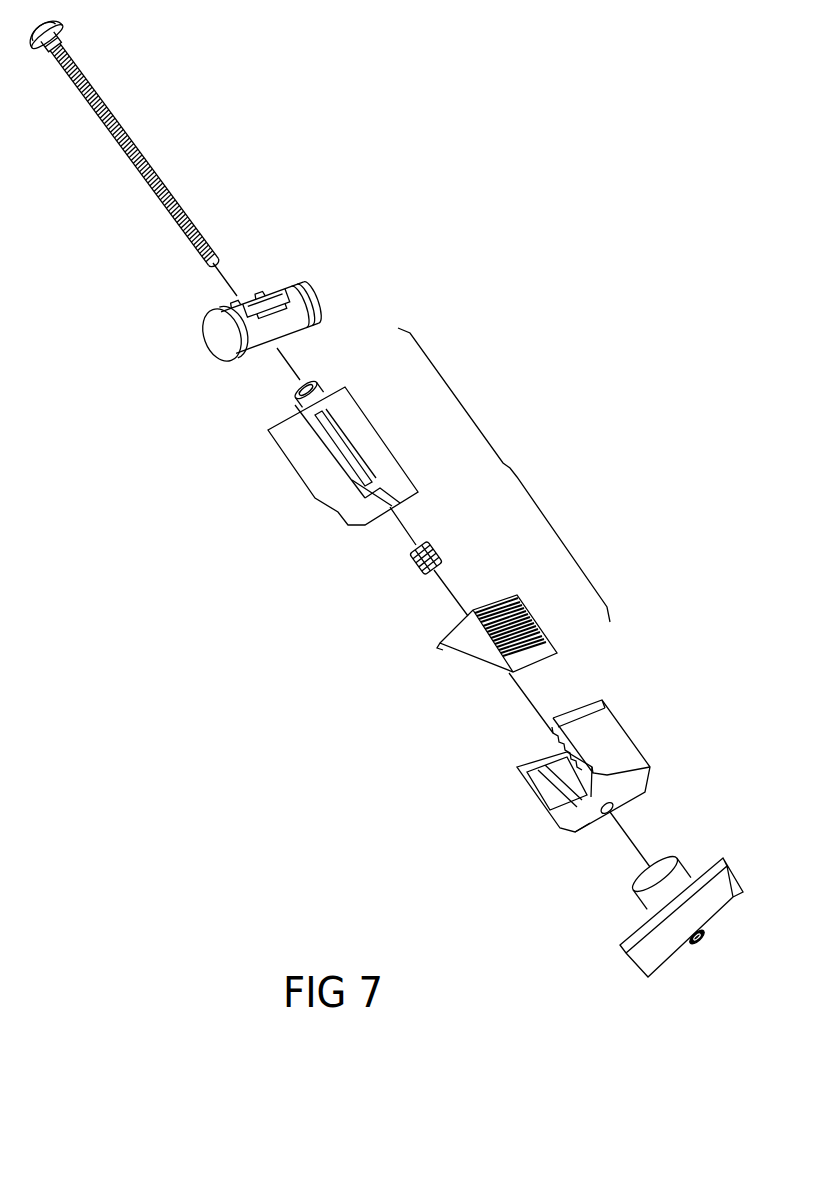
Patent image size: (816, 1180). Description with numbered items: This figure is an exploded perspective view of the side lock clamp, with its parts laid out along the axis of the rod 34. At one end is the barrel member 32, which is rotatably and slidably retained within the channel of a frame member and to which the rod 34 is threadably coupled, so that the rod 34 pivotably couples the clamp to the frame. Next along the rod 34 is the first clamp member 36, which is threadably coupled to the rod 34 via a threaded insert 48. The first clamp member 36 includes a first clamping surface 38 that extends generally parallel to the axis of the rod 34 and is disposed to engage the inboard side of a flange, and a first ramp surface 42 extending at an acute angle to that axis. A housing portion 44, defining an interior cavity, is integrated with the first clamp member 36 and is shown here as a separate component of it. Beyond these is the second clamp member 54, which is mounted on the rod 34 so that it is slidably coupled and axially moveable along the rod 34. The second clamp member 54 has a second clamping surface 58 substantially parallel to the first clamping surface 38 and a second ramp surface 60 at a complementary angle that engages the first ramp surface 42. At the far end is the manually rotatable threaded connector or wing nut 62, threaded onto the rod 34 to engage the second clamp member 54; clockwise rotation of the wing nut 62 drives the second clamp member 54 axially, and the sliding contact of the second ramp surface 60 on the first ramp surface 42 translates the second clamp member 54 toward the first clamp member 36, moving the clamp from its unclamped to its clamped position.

The barrel member 32 is at (222, 337).
The rod 34 is at (137, 134).
The first clamp member 36 is at (504, 475).
The first clamping surface 38 is at (533, 612).
The first ramp surface 42 is at (499, 646).
The housing portion 44 is at (288, 472).
The threaded insert 48 is at (417, 567).
The second clamp member 54 is at (574, 750).
The second clamping surface 58 is at (550, 748).
The second ramp surface 60 is at (533, 766).
The wing nut 62 is at (614, 978).